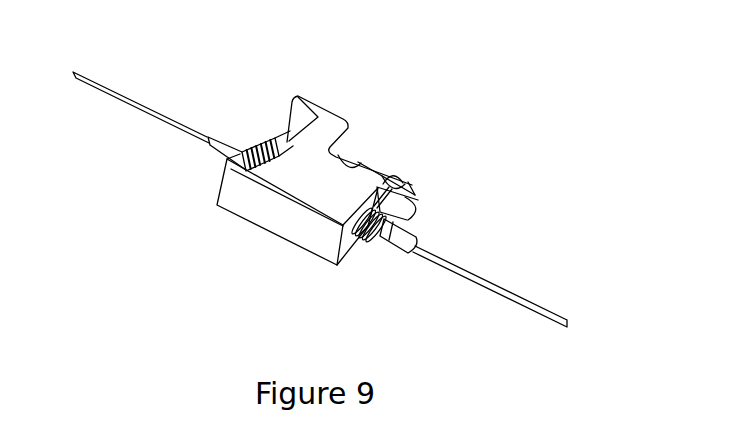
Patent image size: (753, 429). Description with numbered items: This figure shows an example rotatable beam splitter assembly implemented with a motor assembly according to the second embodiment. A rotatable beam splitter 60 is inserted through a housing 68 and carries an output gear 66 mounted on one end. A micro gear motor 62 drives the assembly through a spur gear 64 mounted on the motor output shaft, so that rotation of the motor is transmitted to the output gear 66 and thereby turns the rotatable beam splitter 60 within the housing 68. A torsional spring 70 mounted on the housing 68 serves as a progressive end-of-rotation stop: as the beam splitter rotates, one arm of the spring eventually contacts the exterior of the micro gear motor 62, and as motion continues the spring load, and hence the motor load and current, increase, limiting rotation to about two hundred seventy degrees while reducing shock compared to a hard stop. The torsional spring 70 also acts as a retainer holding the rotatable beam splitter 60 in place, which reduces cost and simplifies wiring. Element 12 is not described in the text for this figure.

The optical fiber 12 is at (115, 92).
The rotatable beam splitter 60 is at (421, 235).
The micro gear motor 62 is at (420, 198).
The spur gear 64 is at (285, 130).
The output gear 66 is at (238, 155).
The housing 68 is at (260, 228).
The torsional spring 70 is at (365, 237).